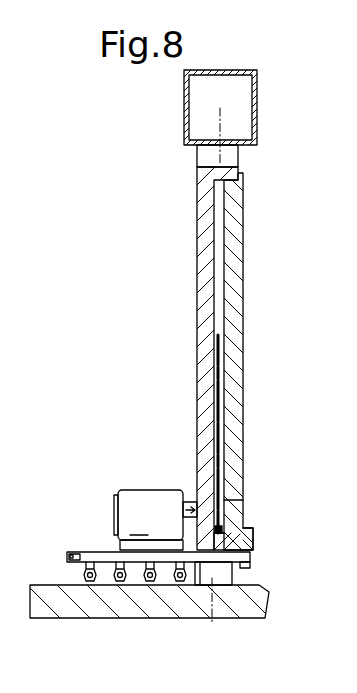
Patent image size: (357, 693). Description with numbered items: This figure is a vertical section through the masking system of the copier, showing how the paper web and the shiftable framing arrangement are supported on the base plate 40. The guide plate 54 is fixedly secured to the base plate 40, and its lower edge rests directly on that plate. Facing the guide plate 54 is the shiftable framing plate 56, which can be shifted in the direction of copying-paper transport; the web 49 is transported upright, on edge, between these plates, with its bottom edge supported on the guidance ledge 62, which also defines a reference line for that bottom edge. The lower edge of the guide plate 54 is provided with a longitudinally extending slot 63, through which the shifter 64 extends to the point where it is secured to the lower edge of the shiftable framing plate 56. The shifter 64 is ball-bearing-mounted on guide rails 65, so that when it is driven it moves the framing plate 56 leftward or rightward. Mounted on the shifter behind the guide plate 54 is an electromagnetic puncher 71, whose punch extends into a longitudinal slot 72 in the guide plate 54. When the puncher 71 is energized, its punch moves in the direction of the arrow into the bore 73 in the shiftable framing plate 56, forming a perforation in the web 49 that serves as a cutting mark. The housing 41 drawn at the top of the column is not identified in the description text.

The base plate 40 is at (228, 611).
The head housing 41 is at (258, 118).
The web 49 is at (222, 410).
The guide plate 54 is at (203, 249).
The shiftable framing plate 56 is at (238, 258).
The guidance ledge 62 is at (233, 512).
The longitudinally extending slot 63 is at (222, 574).
The shifter 64 is at (252, 557).
The guide rails 65 is at (112, 565).
The electromagnetic puncher 71 is at (148, 502).
The longitudinal slot 72 is at (197, 502).
The bore 73 is at (243, 501).